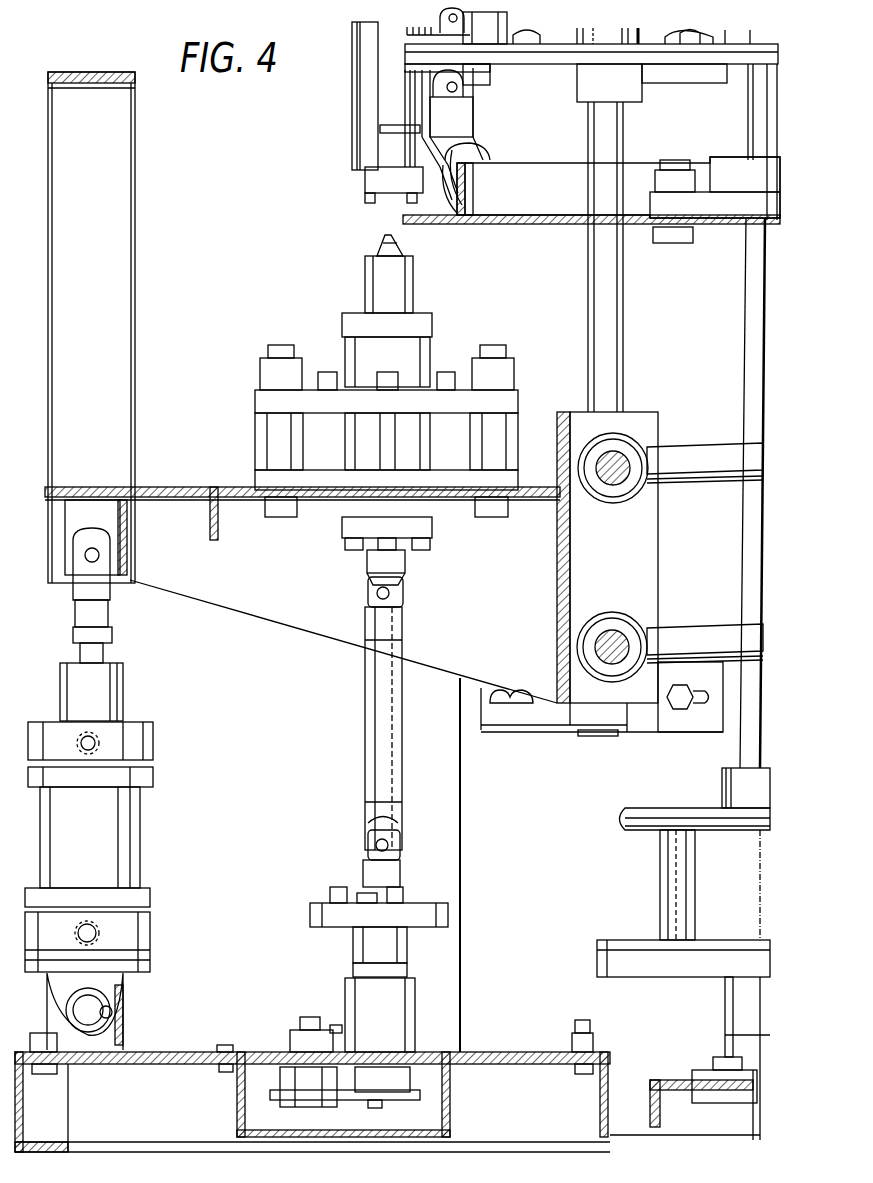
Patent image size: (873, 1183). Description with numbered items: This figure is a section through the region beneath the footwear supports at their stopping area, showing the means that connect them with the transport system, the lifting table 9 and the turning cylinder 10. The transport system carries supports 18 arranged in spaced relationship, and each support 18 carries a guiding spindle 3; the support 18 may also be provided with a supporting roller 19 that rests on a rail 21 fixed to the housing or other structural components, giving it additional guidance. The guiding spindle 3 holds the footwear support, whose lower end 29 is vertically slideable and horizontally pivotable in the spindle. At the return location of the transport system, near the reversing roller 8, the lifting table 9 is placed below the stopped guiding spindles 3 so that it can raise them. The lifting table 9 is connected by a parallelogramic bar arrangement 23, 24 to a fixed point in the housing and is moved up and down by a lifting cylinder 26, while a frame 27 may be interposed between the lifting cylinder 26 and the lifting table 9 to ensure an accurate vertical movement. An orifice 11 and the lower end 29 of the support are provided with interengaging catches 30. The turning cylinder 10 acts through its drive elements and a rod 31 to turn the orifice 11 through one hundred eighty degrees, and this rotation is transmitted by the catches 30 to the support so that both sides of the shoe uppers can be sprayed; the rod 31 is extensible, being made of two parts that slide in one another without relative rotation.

The guiding spindle 3 is at (383, 149).
The reversing roller 8 is at (650, 812).
The lifting table 9 is at (242, 597).
The turning cylinder 10 is at (300, 1102).
The orifice 11 is at (375, 295).
The support 18 is at (440, 114).
The supporting roller 19 is at (470, 155).
The rail 21 is at (545, 200).
The parallelogramic bar 23 is at (698, 455).
The parallelogramic bar 24 is at (698, 641).
The lifting cylinder 26 is at (118, 835).
The frame 27 is at (113, 297).
The lower end of the support 29 is at (383, 181).
The catch 30 is at (378, 248).
The rod 31 is at (378, 757).